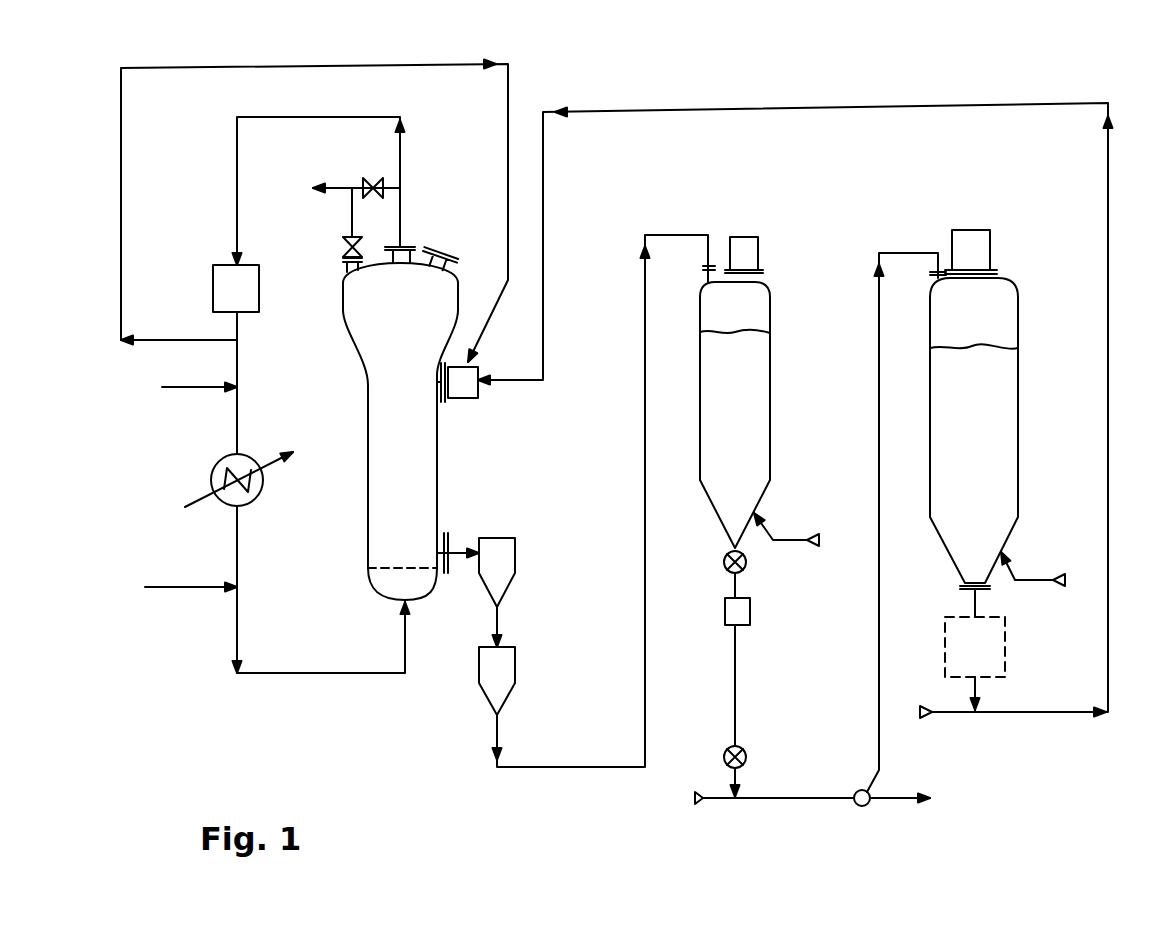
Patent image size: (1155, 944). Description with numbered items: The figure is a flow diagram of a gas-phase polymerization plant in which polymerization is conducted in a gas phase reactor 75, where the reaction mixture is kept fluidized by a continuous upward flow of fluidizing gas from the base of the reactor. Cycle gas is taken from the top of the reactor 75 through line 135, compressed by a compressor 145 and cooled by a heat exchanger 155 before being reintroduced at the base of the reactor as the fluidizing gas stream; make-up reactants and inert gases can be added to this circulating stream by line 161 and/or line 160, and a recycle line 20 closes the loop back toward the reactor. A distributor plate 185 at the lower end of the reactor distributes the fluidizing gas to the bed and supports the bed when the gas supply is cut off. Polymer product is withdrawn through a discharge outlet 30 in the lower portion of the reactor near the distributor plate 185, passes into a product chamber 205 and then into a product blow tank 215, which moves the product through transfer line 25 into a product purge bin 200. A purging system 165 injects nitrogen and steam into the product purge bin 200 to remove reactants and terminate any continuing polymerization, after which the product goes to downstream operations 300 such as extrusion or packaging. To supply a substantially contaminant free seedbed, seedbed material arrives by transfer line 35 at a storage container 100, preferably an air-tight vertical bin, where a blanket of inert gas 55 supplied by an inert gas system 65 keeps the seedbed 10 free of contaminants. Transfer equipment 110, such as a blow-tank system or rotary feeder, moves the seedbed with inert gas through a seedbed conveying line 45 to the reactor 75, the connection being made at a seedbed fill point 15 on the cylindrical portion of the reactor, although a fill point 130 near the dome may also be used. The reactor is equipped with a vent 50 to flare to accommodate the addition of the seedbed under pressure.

The seedbed 10 is at (990, 435).
The seedbed fill point 15 is at (463, 402).
The recycle line 20 is at (362, 66).
The transfer line 25 is at (578, 768).
The discharge outlet 30 is at (450, 540).
The transfer line 35 is at (879, 423).
The seedbed conveying line 45 is at (808, 108).
The vent 50 is at (344, 186).
The blanket of inert gas 55 is at (990, 325).
The inert gas system 65 is at (1028, 578).
The gas phase reactor 75 is at (368, 355).
The storage container 100 is at (1018, 320).
The transfer equipment 110 is at (1010, 656).
The fill point 130 is at (437, 255).
The line 135 is at (320, 117).
The compressor 145 is at (213, 292).
The heat exchanger 155 is at (213, 477).
The line 160 is at (190, 587).
The line 161 is at (176, 391).
The purging system 165 is at (783, 543).
The distributor plate 185 is at (368, 577).
The product purge bin 200 is at (771, 367).
The product chamber 205 is at (516, 558).
The product blow tank 215 is at (516, 664).
The downstream operations 300 is at (887, 800).